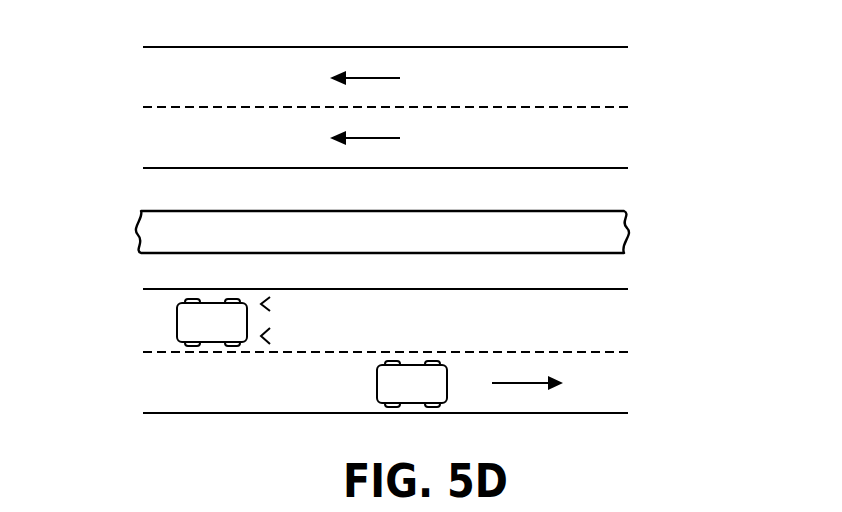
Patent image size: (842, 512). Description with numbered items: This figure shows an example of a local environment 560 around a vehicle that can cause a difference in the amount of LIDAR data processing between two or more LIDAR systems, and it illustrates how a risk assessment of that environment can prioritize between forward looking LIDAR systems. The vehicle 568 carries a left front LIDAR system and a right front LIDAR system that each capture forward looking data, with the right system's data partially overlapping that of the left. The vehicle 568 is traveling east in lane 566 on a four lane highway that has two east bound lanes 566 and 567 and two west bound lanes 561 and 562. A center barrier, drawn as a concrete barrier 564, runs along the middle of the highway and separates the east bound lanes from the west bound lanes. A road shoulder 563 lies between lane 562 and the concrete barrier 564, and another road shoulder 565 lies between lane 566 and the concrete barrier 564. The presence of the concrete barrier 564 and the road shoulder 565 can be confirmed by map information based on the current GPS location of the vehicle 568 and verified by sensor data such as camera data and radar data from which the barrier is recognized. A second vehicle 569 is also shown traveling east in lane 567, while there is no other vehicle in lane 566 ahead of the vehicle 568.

The local environment 560 is at (698, 70).
The west bound lane 561 is at (145, 78).
The west bound lane 562 is at (145, 137).
The road shoulder 563 is at (145, 192).
The concrete barrier 564 is at (394, 241).
The road shoulder 565 is at (145, 270).
The east bound lane 566 is at (640, 322).
The east bound lane 567 is at (640, 383).
The vehicle 568 is at (190, 327).
The vehicle 569 is at (415, 389).